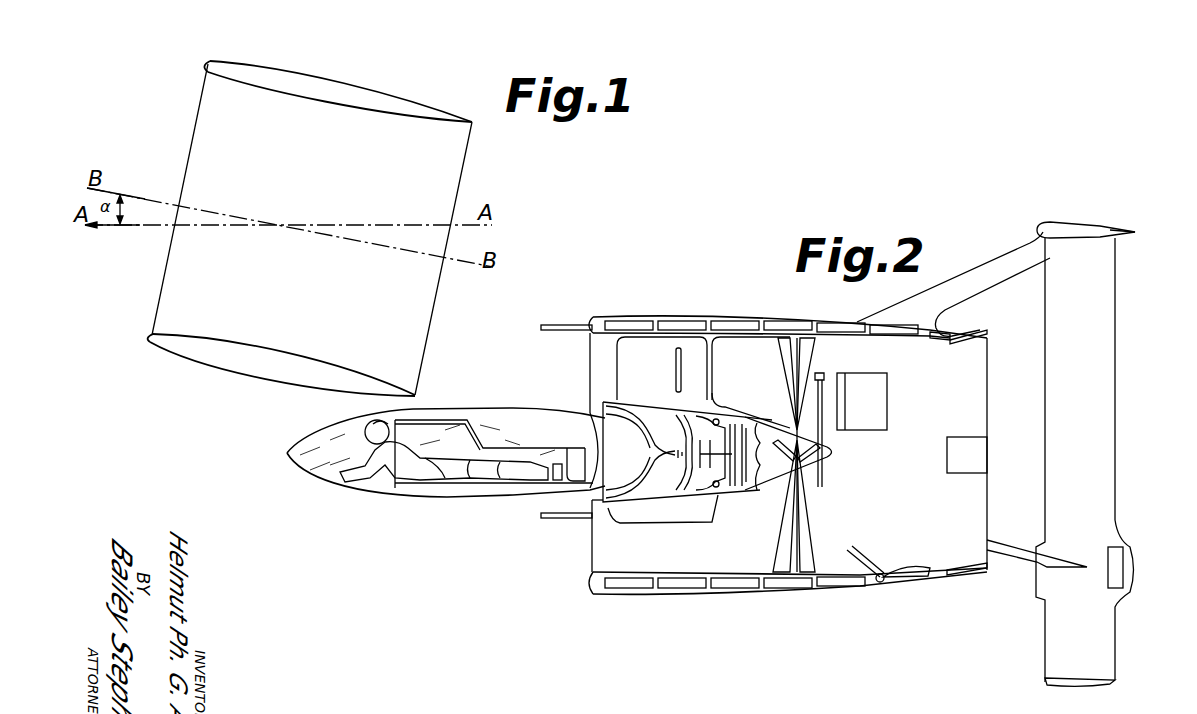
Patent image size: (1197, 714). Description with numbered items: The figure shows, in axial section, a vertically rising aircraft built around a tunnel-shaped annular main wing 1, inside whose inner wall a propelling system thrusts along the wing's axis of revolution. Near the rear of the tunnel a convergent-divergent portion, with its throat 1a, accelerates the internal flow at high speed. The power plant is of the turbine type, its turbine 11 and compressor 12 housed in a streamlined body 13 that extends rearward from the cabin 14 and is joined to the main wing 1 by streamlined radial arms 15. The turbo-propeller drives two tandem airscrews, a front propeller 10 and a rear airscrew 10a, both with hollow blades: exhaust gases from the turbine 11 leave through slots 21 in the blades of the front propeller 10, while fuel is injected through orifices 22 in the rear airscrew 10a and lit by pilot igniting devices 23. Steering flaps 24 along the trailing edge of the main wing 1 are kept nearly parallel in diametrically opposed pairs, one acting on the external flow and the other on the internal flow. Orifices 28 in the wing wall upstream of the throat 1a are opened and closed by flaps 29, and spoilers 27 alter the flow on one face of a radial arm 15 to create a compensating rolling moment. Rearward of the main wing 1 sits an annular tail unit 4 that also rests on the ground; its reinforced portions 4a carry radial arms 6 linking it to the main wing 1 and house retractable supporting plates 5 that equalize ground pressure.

In FIG. 1, the main wing 1 is at (354, 83).
In FIG. 2, the main wing 1 is at (790, 318).
In FIG. 2, the throat 1a is at (922, 346).
In FIG. 2, the tail unit 4 is at (1058, 632).
In FIG. 2, the reinforced portions of tail unit 4a is at (1068, 228).
In FIG. 2, the supporting plates 5 is at (1116, 562).
In FIG. 2, the radial arms 6 is at (976, 286).
In FIG. 2, the propeller 10 is at (787, 420).
In FIG. 2, the rear airscrew 10a is at (807, 428).
In FIG. 2, the turbine 11 is at (727, 470).
In FIG. 2, the compressor 12 is at (672, 456).
In FIG. 2, the streamlined body 13 is at (648, 392).
In FIG. 2, the cabin 14 is at (520, 418).
In FIG. 2, the streamlined radial arms 15 is at (615, 365).
In FIG. 2, the orifices or slots 21 is at (781, 368).
In FIG. 2, the orifices 22 is at (820, 378).
In FIG. 2, the pilot igniting devices 23 is at (825, 380).
In FIG. 2, the flaps 24 is at (963, 448).
In FIG. 2, the spoilers 27 is at (678, 355).
In FIG. 2, the orifices 28 is at (863, 588).
In FIG. 2, the flaps 29 is at (880, 572).